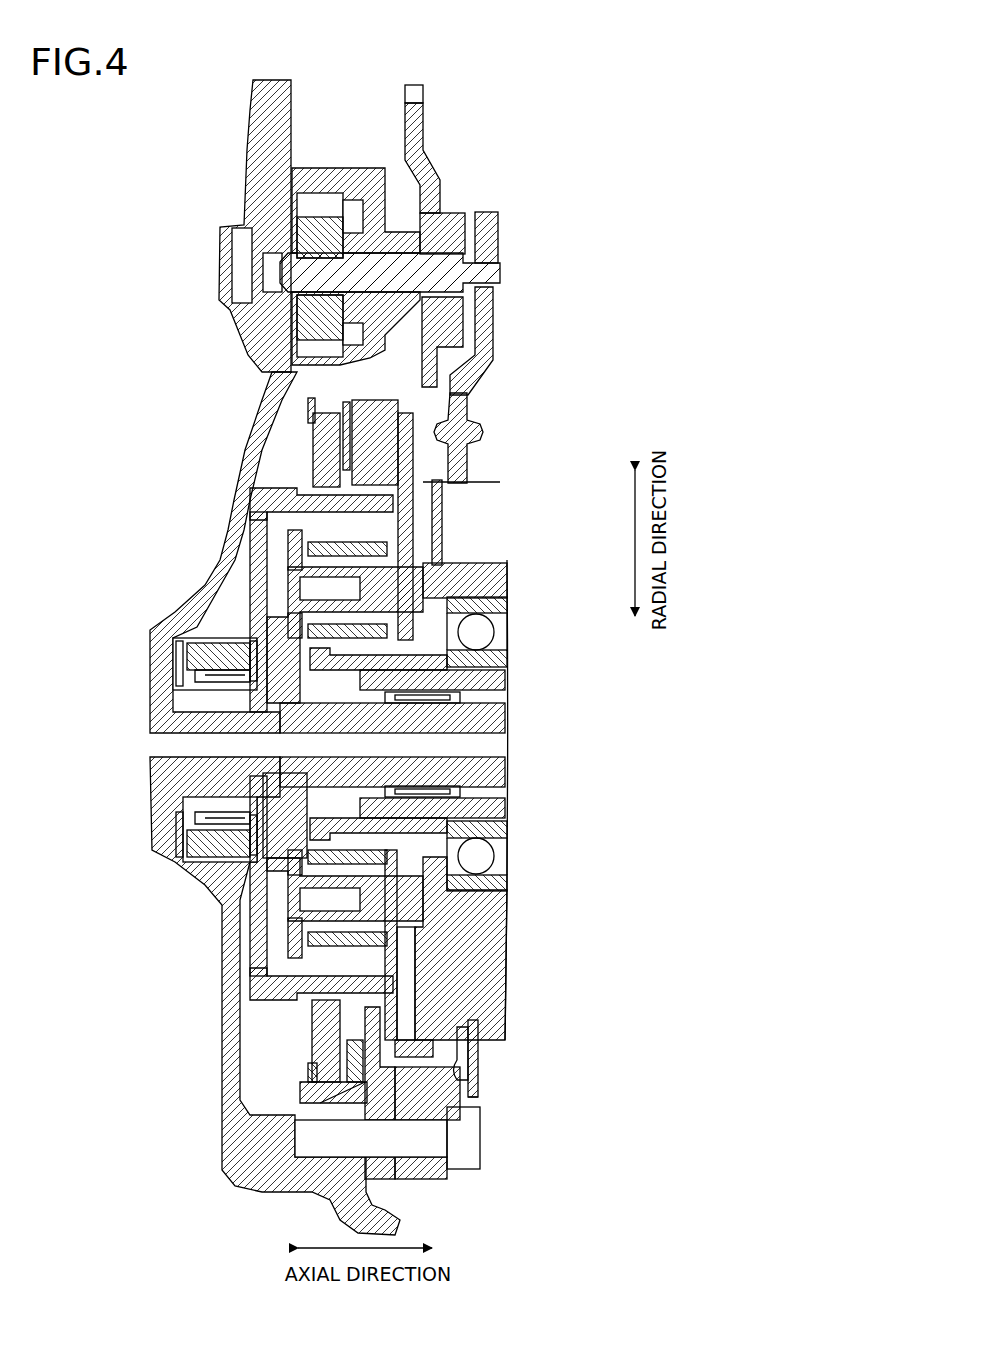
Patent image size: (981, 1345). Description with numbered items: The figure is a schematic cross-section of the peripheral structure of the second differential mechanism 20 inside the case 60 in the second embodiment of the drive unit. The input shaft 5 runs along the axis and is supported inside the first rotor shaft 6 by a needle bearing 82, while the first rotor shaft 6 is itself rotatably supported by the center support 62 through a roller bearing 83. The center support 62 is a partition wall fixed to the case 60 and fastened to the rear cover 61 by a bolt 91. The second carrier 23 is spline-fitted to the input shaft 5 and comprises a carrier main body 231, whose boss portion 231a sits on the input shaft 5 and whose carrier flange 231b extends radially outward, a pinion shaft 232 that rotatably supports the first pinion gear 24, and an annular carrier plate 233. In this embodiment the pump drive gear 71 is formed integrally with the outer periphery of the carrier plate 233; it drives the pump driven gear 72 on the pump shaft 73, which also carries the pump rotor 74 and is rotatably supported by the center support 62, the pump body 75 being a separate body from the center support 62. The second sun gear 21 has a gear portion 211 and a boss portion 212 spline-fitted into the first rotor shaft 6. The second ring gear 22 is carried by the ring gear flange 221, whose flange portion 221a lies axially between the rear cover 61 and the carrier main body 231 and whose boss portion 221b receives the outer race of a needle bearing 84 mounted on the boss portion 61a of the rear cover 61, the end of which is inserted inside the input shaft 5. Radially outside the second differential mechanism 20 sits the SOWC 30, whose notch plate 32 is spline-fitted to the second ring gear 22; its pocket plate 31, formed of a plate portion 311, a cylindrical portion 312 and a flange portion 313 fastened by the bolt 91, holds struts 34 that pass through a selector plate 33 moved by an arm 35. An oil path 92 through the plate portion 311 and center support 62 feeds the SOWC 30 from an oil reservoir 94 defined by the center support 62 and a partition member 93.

The case 60 is at (280, 77).
The pump driven gear 72 is at (430, 122).
The pump body 75 is at (372, 168).
The pump rotor 74 is at (316, 228).
The pump shaft 73 is at (350, 262).
The rear cover 61 is at (270, 382).
The SOWC 30 is at (296, 427).
The notch plate 32 is at (320, 452).
The second differential mechanism 20 is at (278, 484).
The second ring gear 22 is at (258, 500).
The carrier main body 231 is at (262, 545).
The ring gear flange 221 is at (252, 562).
The second carrier 23 is at (275, 625).
The needle bearing 84 is at (210, 690).
The boss portion 61a is at (205, 728).
The boss portion 231a is at (262, 780).
The boss portion 221b is at (255, 858).
The flange portion 221a is at (253, 890).
The carrier flange 231b is at (258, 975).
The arm 35 is at (345, 1057).
The selector plate 33 is at (365, 402).
The struts 34 is at (350, 430).
The pocket plate 31 is at (487, 435).
The pump drive gear 71 is at (408, 502).
The center support 62 is at (442, 517).
The carrier plate 233 is at (385, 550).
The pinion shaft 232 is at (405, 580).
The roller bearing 83 is at (508, 608).
The second sun gear 21 is at (410, 665).
The first rotor shaft 6 is at (507, 684).
The needle bearing 82 is at (455, 698).
The input shaft 5 is at (475, 720).
The boss portion 212 is at (437, 828).
The gear portion 211 is at (455, 862).
The first pinion gear 24 is at (433, 940).
The plate portion 311 is at (420, 1018).
The oil reservoir 94 is at (462, 1043).
The oil path 92 is at (445, 1065).
The partition member 93 is at (480, 1097).
The bolt 91 is at (480, 1140).
The cylindrical portion 312 is at (322, 1083).
The flange portion 313 is at (382, 1177).